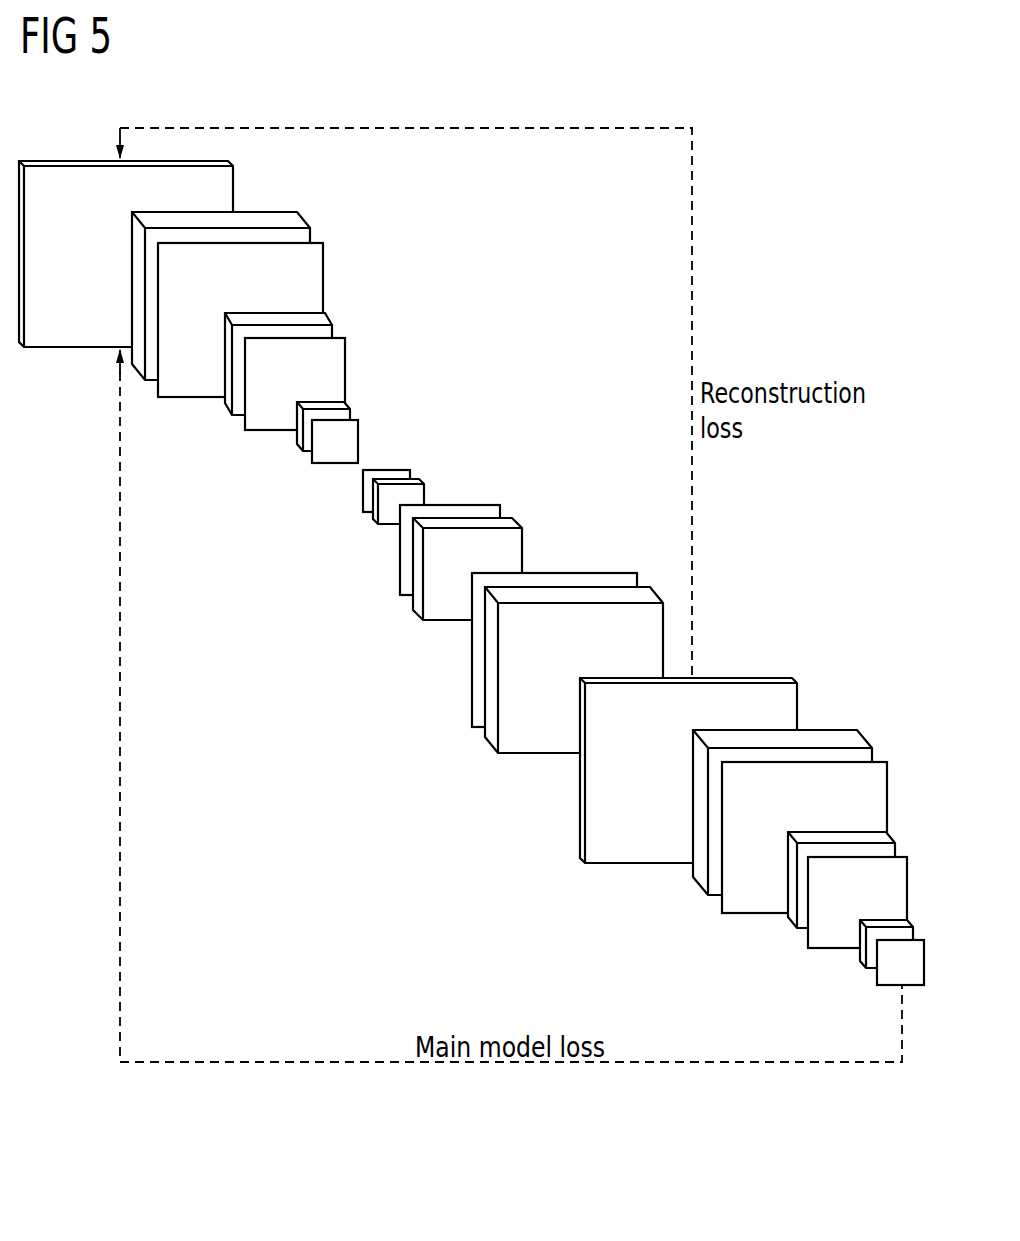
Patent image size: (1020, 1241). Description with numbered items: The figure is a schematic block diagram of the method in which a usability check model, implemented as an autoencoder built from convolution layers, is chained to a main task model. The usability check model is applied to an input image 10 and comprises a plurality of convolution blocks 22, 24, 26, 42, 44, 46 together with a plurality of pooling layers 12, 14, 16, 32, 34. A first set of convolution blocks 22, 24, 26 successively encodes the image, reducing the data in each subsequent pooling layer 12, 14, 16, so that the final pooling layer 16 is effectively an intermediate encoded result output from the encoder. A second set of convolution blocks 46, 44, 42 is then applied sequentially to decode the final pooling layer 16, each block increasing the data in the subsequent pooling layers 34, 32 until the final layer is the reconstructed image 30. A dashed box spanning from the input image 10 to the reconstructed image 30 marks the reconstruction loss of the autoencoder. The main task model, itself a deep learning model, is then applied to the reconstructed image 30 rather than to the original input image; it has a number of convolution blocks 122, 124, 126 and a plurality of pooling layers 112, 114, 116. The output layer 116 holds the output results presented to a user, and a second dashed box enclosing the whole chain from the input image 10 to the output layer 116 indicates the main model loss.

The input image 10 is at (78, 176).
The pooling layer 12 is at (193, 388).
The pooling layer 14 is at (272, 432).
The final pooling layer 16 is at (351, 446).
The convolution block 22 is at (268, 213).
The convolution block 24 is at (302, 317).
The convolution block 26 is at (358, 410).
The reconstructed image 30 is at (752, 694).
The pooling layer 32 is at (468, 662).
The pooling layer 34 is at (398, 556).
The convolution block 42 is at (541, 730).
The convolution block 44 is at (502, 560).
The convolution block 46 is at (422, 486).
The pooling layer 112 is at (726, 906).
The pooling layer 114 is at (898, 866).
The output layer 116 is at (891, 982).
The convolution block 122 is at (824, 733).
The convolution block 124 is at (786, 926).
The convolution block 126 is at (852, 956).